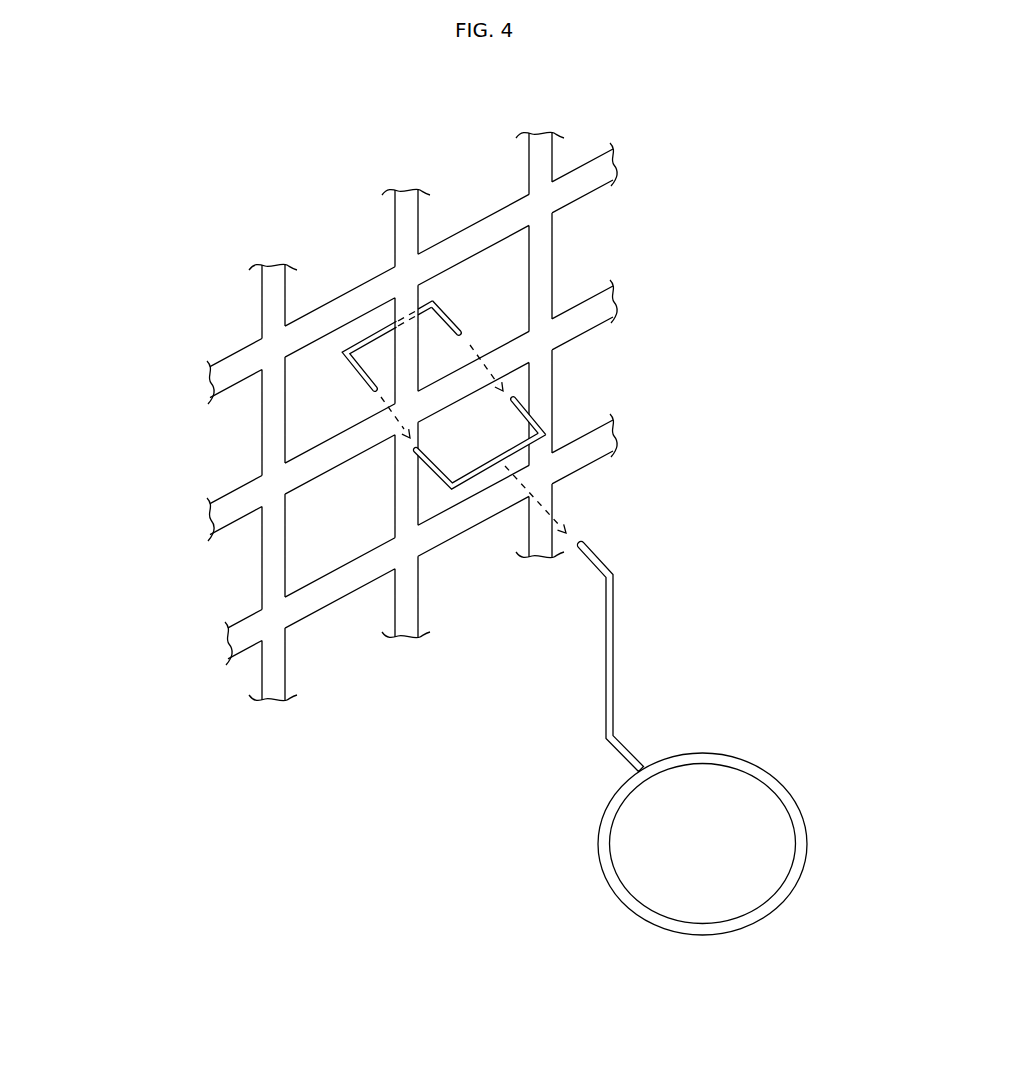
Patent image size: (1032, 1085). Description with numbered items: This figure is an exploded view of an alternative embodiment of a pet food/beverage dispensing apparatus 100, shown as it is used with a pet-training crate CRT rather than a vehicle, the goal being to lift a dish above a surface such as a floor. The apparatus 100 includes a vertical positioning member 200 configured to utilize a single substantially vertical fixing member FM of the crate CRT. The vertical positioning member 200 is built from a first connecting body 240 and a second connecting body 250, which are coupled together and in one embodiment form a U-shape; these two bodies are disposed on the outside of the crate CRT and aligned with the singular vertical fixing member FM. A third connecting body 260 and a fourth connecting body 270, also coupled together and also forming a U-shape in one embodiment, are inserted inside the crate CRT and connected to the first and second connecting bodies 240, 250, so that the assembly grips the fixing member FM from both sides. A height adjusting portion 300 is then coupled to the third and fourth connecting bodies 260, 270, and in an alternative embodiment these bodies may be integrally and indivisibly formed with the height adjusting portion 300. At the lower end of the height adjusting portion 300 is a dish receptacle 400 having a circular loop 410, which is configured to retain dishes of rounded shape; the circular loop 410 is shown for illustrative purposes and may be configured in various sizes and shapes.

The vertical fixing member FM is at (393, 218).
The pet-training crate CRT is at (198, 328).
The pet food/beverage dispensing apparatus 100 is at (708, 625).
The vertical positioning member 200 is at (378, 430).
The first connecting body 240 is at (375, 389).
The second connecting body 250 is at (440, 314).
The third connecting body 260 is at (396, 483).
The fourth connecting body 270 is at (530, 415).
The height adjusting portion 300 is at (585, 680).
The dish receptacle 400 is at (784, 774).
The circular loop 410 is at (603, 876).